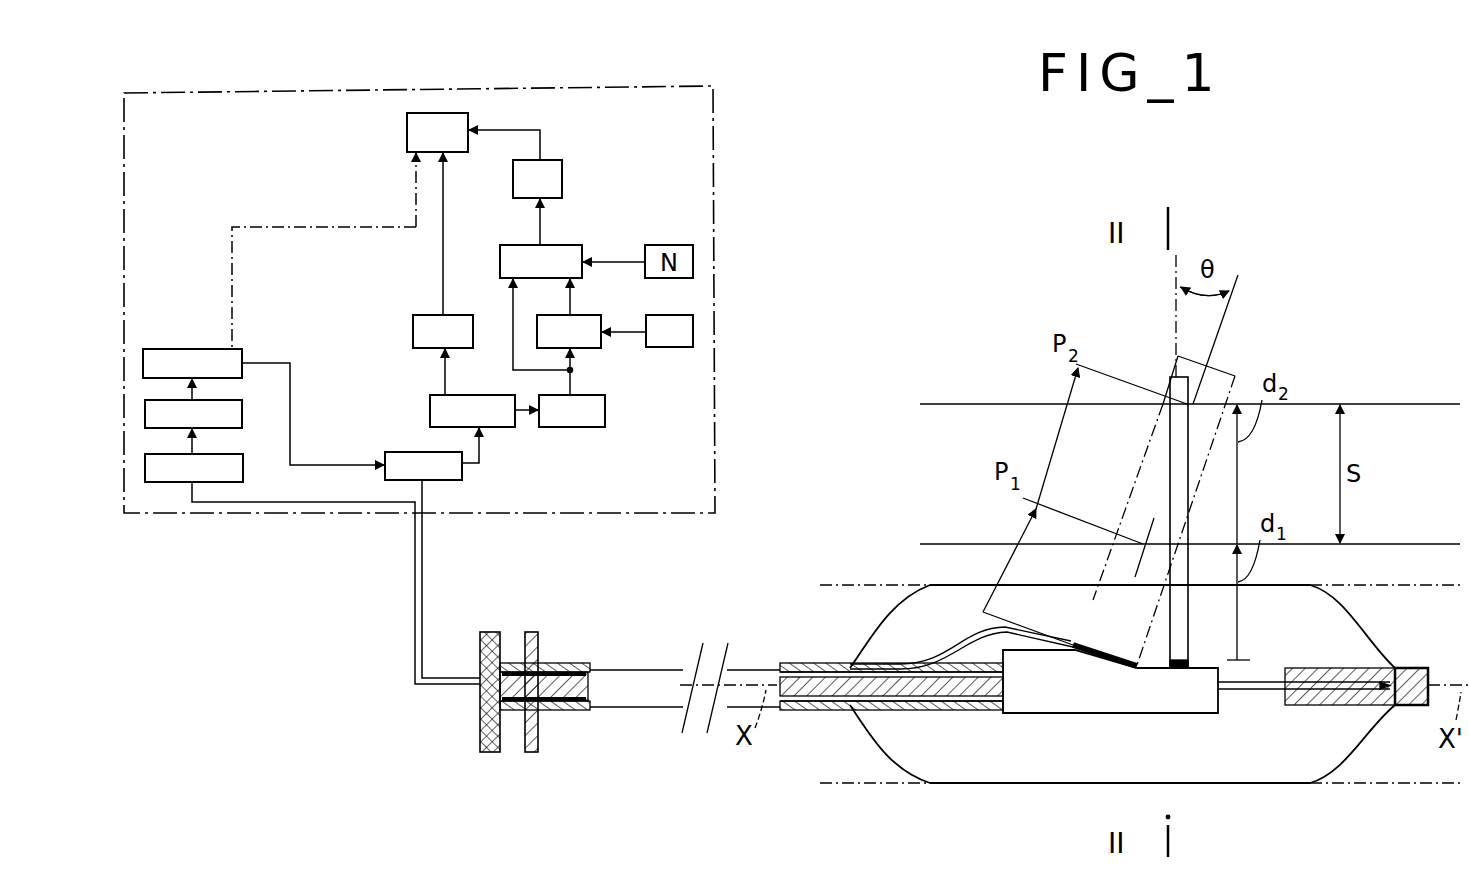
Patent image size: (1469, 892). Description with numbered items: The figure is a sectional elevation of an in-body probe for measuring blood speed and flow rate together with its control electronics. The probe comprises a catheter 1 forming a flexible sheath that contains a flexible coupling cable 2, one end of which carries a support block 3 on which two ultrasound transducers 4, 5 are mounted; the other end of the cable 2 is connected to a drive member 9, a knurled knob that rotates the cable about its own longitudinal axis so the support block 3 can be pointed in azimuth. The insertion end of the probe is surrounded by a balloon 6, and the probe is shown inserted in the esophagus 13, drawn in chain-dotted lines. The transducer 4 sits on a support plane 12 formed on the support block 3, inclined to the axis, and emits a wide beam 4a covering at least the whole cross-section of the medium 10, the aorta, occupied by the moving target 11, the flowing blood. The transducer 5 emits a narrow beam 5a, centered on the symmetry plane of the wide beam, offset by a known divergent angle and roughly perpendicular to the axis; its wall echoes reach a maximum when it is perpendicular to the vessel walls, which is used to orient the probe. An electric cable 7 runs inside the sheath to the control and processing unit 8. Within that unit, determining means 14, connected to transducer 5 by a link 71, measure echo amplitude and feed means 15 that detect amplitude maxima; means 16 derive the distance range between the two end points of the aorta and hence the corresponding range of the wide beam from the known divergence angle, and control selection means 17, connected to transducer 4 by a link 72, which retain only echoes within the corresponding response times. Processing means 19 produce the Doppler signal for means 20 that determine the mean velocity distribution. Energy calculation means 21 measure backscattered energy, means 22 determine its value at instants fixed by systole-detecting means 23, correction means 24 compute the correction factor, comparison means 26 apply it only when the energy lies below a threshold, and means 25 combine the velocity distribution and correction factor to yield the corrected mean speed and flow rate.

The catheter 1 is at (822, 706).
The flexible coupling cable 2 is at (585, 662).
The support block 3 is at (1066, 700).
The ultrasound transducer 4 is at (1090, 652).
The wide beam 4a is at (1140, 470).
The ultrasound transducer 5 is at (1183, 700).
The narrow beam 5a is at (1222, 364).
The balloon 6 is at (1365, 633).
The electric cable 7 is at (947, 661).
The link 71 is at (412, 543).
The link 72 is at (425, 543).
The control and processing unit 8 is at (713, 117).
The drive member 9 is at (483, 740).
The medium 10 is at (1362, 402).
The moving target 11 is at (1426, 530).
The support plane 12 is at (1118, 700).
The esophagus 13 is at (856, 790).
The determining means 14 is at (194, 468).
The amplitude maxima detecting means 15 is at (193, 414).
The range determination means 16 is at (192, 364).
The selection means 17 is at (423, 466).
The processing means 19 is at (472, 411).
The mean velocity distribution determining means 20 is at (443, 331).
The energy calculation means 21 is at (572, 411).
The energy value determining means 22 is at (569, 331).
The systole instant determining means 23 is at (669, 331).
The correction means 24 is at (537, 179).
The corrected speed calculation means 25 is at (437, 132).
The comparison means 26 is at (541, 261).